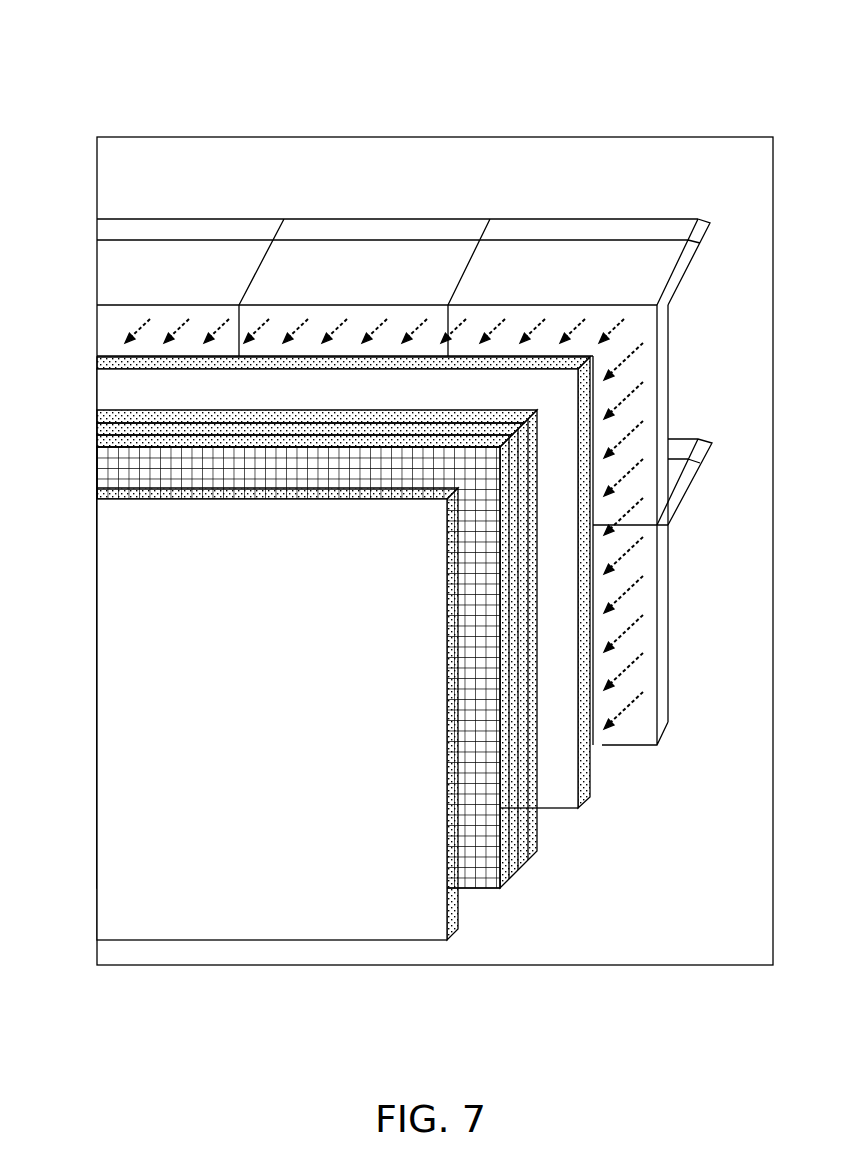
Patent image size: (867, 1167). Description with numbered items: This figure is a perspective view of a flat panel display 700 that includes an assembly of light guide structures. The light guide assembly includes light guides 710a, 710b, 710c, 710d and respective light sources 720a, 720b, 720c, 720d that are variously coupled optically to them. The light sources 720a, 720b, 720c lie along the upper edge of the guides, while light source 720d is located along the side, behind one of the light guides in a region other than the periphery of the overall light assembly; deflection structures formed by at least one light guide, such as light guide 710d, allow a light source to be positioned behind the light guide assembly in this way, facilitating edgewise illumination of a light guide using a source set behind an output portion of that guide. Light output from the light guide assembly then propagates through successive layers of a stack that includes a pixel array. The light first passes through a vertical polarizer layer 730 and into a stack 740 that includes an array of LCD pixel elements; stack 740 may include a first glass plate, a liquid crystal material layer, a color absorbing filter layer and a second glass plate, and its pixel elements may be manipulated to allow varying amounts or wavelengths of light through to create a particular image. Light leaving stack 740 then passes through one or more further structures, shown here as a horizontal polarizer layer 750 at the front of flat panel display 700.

The flat panel display 700 is at (62, 73).
The light guide 710a is at (204, 278).
The light guide 710b is at (386, 278).
The light guide 710c is at (596, 278).
The light guide 710d is at (672, 617).
The light source 720a is at (182, 210).
The light source 720b is at (364, 210).
The light source 720c is at (572, 210).
The light source 720d is at (681, 430).
The vertical polarizer layer 730 is at (565, 399).
The stack 740 is at (486, 477).
The horizontal polarizer layer 750 is at (436, 529).